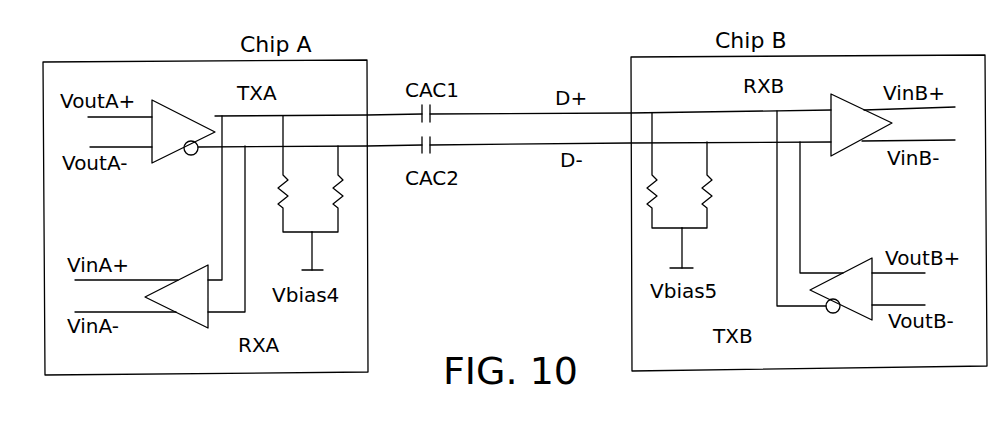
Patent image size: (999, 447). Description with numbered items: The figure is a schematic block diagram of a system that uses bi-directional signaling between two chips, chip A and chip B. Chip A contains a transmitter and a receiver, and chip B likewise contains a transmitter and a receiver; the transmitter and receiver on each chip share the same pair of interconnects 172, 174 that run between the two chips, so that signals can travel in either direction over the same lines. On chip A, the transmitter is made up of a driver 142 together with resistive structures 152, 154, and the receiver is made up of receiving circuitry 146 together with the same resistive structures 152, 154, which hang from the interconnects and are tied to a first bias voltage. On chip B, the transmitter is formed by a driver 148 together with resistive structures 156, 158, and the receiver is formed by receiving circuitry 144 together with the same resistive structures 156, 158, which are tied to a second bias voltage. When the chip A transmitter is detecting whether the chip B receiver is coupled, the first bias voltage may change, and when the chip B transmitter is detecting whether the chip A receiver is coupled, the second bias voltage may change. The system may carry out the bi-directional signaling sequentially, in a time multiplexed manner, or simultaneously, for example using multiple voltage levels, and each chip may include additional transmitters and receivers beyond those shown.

The driver 142 is at (170, 156).
The receiving circuitry 144 is at (840, 154).
The receiving circuitry 146 is at (187, 318).
The driver 148 is at (853, 312).
The resistive structure 152 is at (283, 203).
The resistive structure 154 is at (343, 203).
The resistive structure 156 is at (648, 188).
The resistive structure 158 is at (747, 204).
The interconnect 172 is at (585, 104).
The interconnect 174 is at (576, 158).